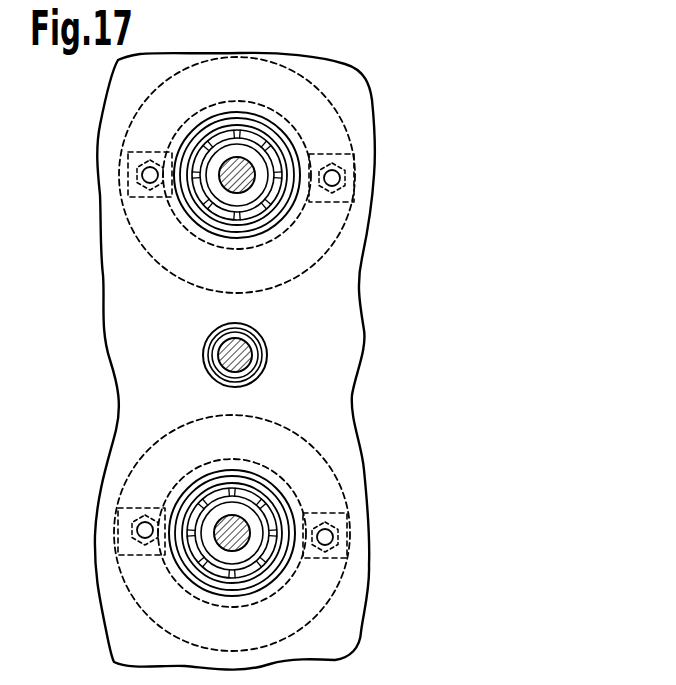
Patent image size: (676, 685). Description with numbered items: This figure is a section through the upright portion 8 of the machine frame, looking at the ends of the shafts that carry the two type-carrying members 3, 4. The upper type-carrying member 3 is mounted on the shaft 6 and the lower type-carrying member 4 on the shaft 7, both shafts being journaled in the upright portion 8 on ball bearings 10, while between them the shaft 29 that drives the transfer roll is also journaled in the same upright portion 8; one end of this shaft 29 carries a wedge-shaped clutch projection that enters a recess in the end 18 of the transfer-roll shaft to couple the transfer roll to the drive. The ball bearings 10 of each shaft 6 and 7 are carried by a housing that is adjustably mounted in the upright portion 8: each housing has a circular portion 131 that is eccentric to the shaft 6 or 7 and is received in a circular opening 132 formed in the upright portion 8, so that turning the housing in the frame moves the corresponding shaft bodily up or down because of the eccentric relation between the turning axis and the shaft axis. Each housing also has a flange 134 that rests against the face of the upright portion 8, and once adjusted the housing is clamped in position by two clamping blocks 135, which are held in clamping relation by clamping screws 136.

The type-carrying member 3 is at (165, 268).
The type-carrying member 4 is at (172, 432).
The shaft 6 is at (221, 187).
The shaft 7 is at (217, 542).
The upright portion 8 is at (132, 362).
The ball bearing 10 is at (216, 207).
The end of shaft of transfer roll 18 is at (142, 174).
The shaft 29 is at (243, 360).
The circular portion 131 is at (298, 207).
The circular opening 132 is at (287, 222).
The flange 134 is at (290, 135).
The clamping block 135 is at (126, 152).
The clamping screw 136 is at (148, 174).